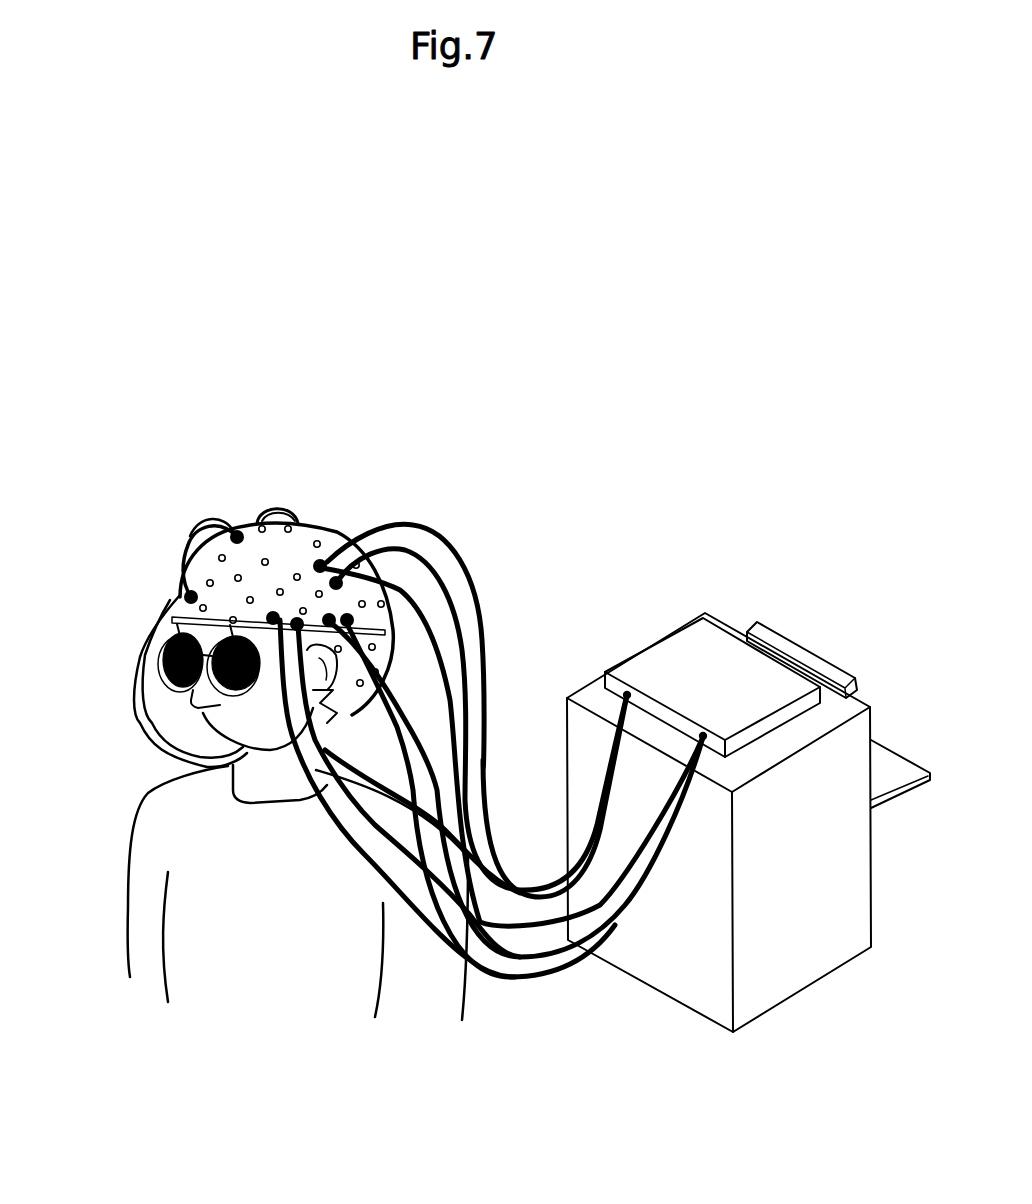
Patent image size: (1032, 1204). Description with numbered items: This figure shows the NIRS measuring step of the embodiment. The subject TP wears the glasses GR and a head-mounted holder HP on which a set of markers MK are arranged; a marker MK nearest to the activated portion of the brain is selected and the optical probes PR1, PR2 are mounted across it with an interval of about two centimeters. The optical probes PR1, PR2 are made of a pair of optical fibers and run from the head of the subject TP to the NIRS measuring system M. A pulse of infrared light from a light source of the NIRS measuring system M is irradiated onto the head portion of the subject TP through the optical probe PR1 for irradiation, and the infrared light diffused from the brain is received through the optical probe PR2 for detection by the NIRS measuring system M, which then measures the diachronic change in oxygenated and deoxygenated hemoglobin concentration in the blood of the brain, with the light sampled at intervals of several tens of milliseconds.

The subject TP is at (127, 852).
The holder / helmet with probe holes HP is at (337, 530).
The marker MK is at (325, 577).
The glasses GR is at (160, 662).
The optical probe for irradiation PR1 is at (433, 522).
The optical probe for detection PR2 is at (430, 565).
The NIRS measuring system M is at (660, 653).